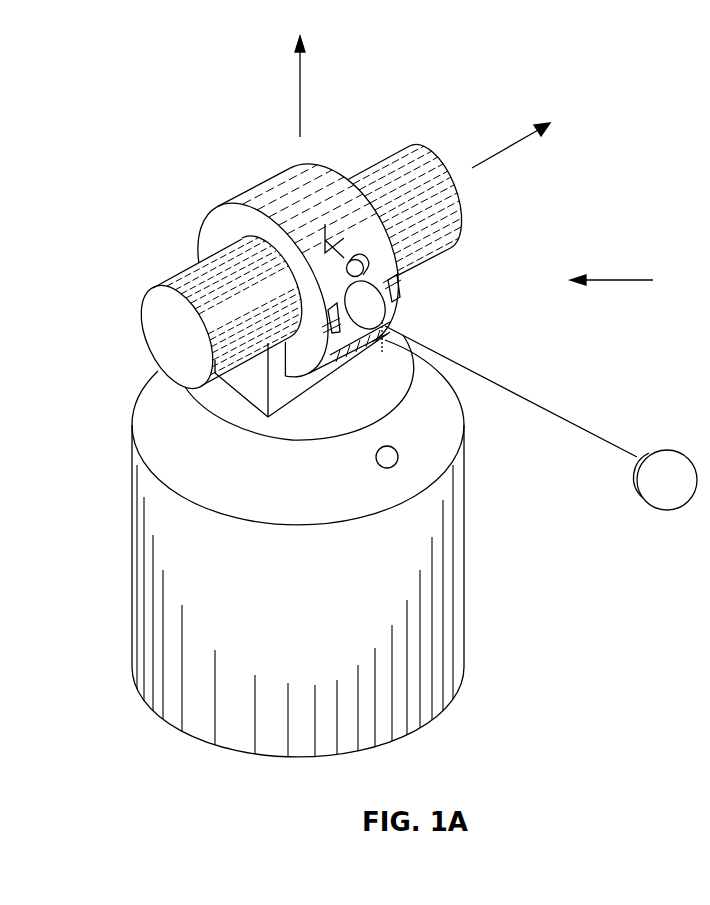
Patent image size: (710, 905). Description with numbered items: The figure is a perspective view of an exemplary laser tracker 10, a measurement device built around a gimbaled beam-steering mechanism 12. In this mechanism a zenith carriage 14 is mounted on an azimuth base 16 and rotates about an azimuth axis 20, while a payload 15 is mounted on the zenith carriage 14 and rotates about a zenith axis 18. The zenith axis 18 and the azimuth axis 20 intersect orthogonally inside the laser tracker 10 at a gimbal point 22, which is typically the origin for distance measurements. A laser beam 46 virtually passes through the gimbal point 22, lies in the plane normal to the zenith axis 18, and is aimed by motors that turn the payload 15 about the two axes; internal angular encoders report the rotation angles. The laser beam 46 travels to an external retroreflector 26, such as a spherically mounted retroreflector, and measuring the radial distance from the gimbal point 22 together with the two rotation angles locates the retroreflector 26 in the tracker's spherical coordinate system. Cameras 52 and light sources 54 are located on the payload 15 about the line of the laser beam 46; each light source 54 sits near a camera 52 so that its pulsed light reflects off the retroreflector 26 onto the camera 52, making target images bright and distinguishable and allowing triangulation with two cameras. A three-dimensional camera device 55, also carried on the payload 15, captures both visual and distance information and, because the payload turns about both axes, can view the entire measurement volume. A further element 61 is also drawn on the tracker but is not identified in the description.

The laser tracker 10 is at (142, 156).
The gimbaled beam-steering mechanism 12 is at (610, 280).
The zenith carriage 14 is at (146, 310).
The payload 15 is at (390, 314).
The azimuth base 16 is at (130, 440).
The zenith axis 18 is at (512, 146).
The azimuth axis 20 is at (300, 88).
The gimbal point 22 is at (322, 238).
The retroreflector 26 is at (667, 450).
The laser beam 46 is at (535, 403).
The camera 52 is at (331, 313).
The light source 54 is at (330, 333).
The 3D camera device 55 is at (367, 254).
The post 61 is at (383, 355).